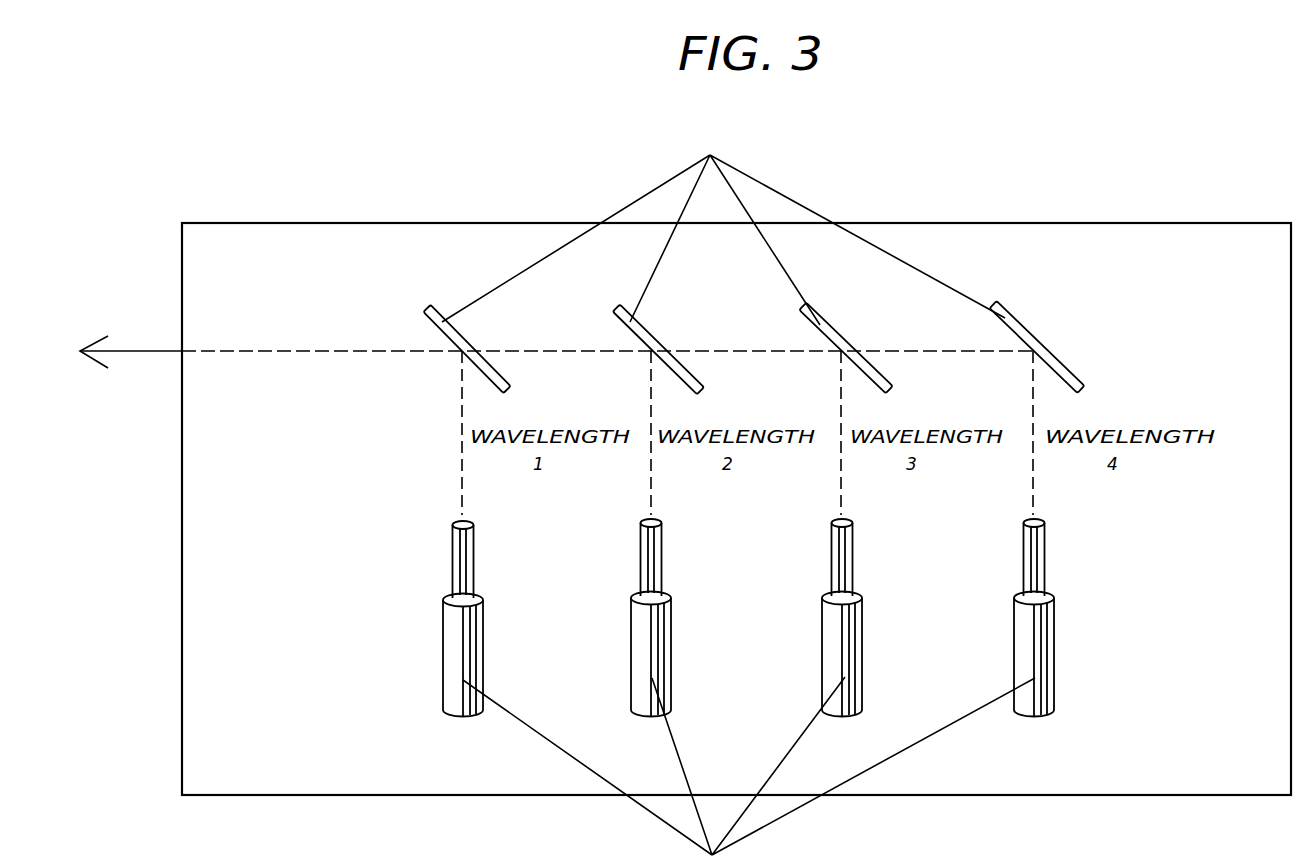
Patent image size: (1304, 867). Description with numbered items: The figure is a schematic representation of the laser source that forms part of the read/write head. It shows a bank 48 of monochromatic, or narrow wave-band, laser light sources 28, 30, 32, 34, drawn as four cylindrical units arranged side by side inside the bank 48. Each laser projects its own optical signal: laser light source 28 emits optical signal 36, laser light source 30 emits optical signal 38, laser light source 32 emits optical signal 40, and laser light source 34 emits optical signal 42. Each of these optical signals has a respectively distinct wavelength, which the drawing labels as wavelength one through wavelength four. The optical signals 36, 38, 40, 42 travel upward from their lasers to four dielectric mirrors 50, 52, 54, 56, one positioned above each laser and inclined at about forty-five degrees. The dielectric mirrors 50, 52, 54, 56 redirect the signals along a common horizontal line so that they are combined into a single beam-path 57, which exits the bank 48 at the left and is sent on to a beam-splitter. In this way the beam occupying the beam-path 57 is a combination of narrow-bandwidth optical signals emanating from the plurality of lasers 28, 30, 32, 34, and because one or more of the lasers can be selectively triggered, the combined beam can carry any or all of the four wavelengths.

The laser light source 28 is at (443, 625).
The laser light source 30 is at (671, 623).
The laser light source 32 is at (862, 631).
The laser light source 34 is at (1055, 640).
The optical signal 36 is at (462, 494).
The optical signal 38 is at (651, 497).
The optical signal 40 is at (841, 497).
The optical signal 42 is at (1033, 493).
The bank 48 is at (1240, 223).
The dielectric mirror 50 is at (438, 309).
The dielectric mirror 52 is at (650, 332).
The dielectric mirror 54 is at (840, 334).
The dielectric mirror 56 is at (1052, 350).
The beam-path 57 is at (128, 351).